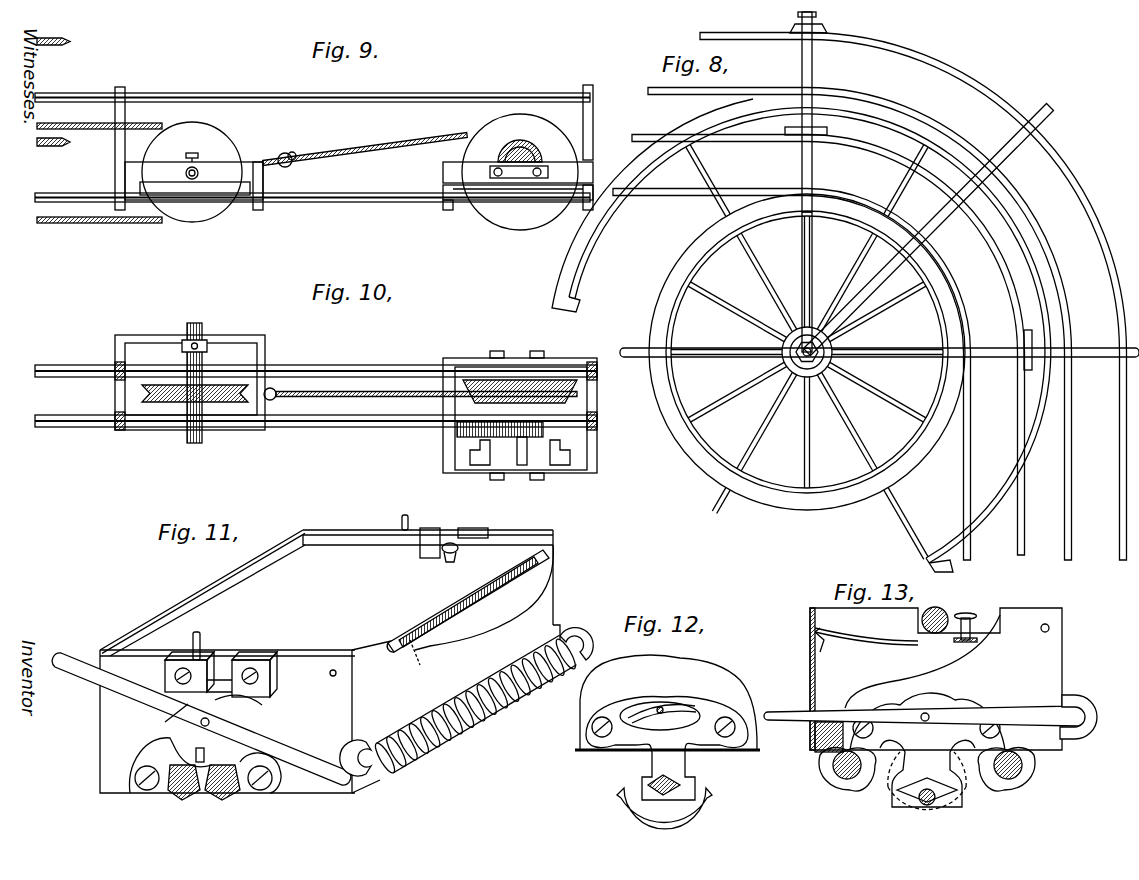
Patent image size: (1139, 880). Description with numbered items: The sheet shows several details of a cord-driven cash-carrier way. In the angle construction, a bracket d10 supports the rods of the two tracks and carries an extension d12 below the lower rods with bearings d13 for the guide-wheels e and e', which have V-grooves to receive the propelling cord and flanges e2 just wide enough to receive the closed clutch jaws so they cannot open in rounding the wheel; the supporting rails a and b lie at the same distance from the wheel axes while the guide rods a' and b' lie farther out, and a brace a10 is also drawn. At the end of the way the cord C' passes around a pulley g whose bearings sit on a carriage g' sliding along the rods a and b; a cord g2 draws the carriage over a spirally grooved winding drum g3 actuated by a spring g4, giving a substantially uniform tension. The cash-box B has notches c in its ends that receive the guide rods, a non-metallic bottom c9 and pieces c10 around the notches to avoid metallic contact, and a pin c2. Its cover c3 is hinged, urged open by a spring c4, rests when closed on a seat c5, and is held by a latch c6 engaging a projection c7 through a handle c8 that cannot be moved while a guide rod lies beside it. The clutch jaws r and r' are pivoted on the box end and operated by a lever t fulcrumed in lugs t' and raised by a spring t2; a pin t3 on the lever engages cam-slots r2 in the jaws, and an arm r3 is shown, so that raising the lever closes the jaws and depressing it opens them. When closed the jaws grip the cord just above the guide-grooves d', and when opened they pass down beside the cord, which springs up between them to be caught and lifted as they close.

In FIG. 9, the supporting rail a is at (312, 84).
In FIG. 10, the supporting rail a is at (316, 392).
In FIG. 8, the supporting rail a is at (868, 323).
In FIG. 9, the guide rod a' is at (65, 41).
In FIG. 8, the guide rod a' is at (913, 297).
In FIG. 9, the supporting rail b is at (312, 185).
In FIG. 8, the supporting rail b is at (802, 377).
In FIG. 13, the supporting rail b is at (923, 769).
In FIG. 9, the guide rod b' is at (65, 143).
In FIG. 8, the guide rod b' is at (839, 345).
In FIG. 13, the guide rod b' is at (938, 608).
In FIG. 9, the notch c is at (80, 118).
In FIG. 13, the notch c is at (920, 614).
In FIG. 9, the propelling cord C' is at (99, 233).
In FIG. 12, the propelling cord C' is at (645, 808).
In FIG. 13, the propelling cord C' is at (878, 820).
In FIG. 9, the pulley g is at (192, 172).
In FIG. 10, the pulley g is at (195, 389).
In FIG. 9, the carriage g' is at (189, 148).
In FIG. 10, the carriage g' is at (205, 381).
In FIG. 9, the cord g2 is at (392, 146).
In FIG. 10, the cord g2 is at (392, 390).
In FIG. 9, the spirally-grooved winding-drum g3 is at (520, 172).
In FIG. 10, the spirally-grooved winding-drum g3 is at (585, 392).
In FIG. 9, the spring g4 is at (527, 150).
In FIG. 10, the spring g4 is at (470, 440).
In FIG. 8, the bracket d10 is at (812, 66).
In FIG. 8, the extension d12 is at (803, 268).
In FIG. 8, the bearing d13 is at (782, 345).
In FIG. 8, the brace rod a10 is at (1003, 168).
In FIG. 8, the guide-wheel e is at (802, 335).
In FIG. 8, the guide-wheel e' is at (806, 352).
In FIG. 8, the flange e2 is at (566, 308).
In FIG. 11, the pin c2 is at (200, 640).
In FIG. 11, the cover c3 is at (326, 661).
In FIG. 13, the cover c3 is at (878, 638).
In FIG. 11, the spring c4 is at (432, 620).
In FIG. 13, the seat c5 is at (824, 644).
In FIG. 11, the latch c6 is at (395, 606).
In FIG. 13, the latch c6 is at (972, 636).
In FIG. 11, the projection c7 is at (500, 540).
In FIG. 11, the operating-handle c8 is at (447, 544).
In FIG. 13, the operating-handle c8 is at (968, 612).
In FIG. 13, the bottom c9 is at (815, 736).
In FIG. 11, the piece c10 is at (270, 678).
In FIG. 11, the lever t is at (201, 719).
In FIG. 13, the lever t is at (925, 704).
In FIG. 11, the lug t' is at (466, 690).
In FIG. 13, the lug t' is at (1078, 705).
In FIG. 11, the spring t2 is at (436, 710).
In FIG. 11, the pin t3 is at (248, 714).
In FIG. 12, the pin t3 is at (660, 708).
In FIG. 11, the clutch jaw r is at (178, 790).
In FIG. 12, the clutch jaw r is at (677, 779).
In FIG. 13, the clutch jaw r is at (927, 750).
In FIG. 11, the clutch jaw r' is at (222, 791).
In FIG. 12, the clutch jaw r' is at (629, 773).
In FIG. 13, the clutch jaw r' is at (927, 787).
In FIG. 11, the cam-slot r2 is at (200, 757).
In FIG. 12, the cam-slot r2 is at (652, 758).
In FIG. 11, the pawl arm r3 is at (162, 720).
In FIG. 12, the pawl arm r3 is at (668, 712).
In FIG. 11, the cash-box B is at (452, 661).
In FIG. 13, the cash-box B is at (936, 679).
In FIG. 12, the guide-groove d' is at (716, 813).
In FIG. 13, the guide-groove d' is at (940, 791).